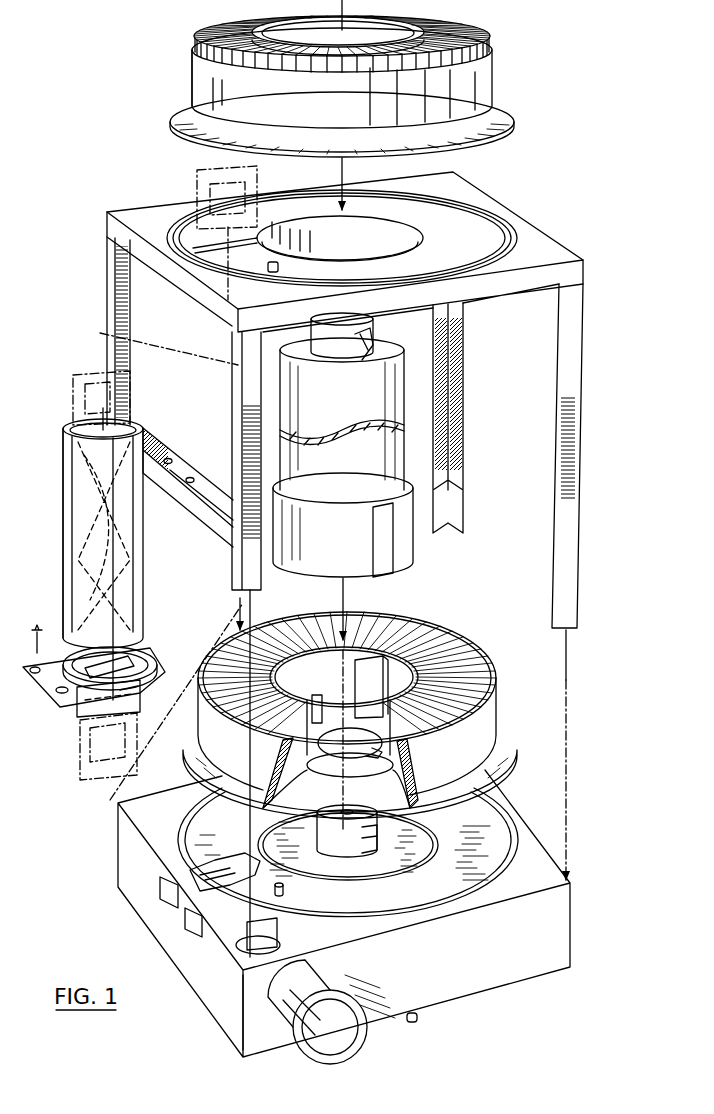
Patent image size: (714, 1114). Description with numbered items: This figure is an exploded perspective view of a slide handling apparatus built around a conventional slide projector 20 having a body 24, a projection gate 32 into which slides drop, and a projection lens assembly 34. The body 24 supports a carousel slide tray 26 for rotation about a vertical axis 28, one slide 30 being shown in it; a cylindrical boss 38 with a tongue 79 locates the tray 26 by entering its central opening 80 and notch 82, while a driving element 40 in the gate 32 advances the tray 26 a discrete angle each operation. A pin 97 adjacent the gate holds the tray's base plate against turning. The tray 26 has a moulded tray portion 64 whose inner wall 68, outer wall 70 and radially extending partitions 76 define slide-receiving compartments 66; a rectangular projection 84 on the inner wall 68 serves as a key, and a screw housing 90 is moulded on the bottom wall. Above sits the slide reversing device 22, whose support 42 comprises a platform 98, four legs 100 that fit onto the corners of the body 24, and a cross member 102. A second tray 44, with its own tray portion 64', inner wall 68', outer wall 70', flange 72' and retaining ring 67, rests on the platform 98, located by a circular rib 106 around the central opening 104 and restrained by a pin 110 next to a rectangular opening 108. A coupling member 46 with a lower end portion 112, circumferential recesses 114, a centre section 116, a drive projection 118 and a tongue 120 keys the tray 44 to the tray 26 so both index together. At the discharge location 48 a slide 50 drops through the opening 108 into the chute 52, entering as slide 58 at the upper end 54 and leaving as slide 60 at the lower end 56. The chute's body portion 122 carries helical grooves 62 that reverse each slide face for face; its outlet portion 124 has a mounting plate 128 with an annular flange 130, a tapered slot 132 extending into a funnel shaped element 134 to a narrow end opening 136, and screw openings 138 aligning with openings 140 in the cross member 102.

The slide projector 20 is at (576, 917).
The slide reversing device 22 is at (581, 60).
The projector body 24 is at (560, 945).
The slide tray 26 is at (447, 623).
The vertical axis 28 is at (344, 50).
The slide 30 is at (261, 773).
The projection gate 32 is at (186, 875).
The projection lens assembly 34 is at (364, 993).
The cylindrical boss 38 is at (345, 809).
The driving element 40 is at (236, 892).
The support 42 is at (574, 247).
The second slide tray 44 is at (499, 49).
The coupling member 46 is at (415, 394).
The discharge location 48 is at (192, 257).
The slide leaving the tray 50 is at (197, 177).
The chute 52 is at (152, 420).
The upper end of chute 54 is at (62, 424).
The lower end of chute 56 is at (52, 707).
The slide entering chute 58 is at (86, 369).
The slide leaving chute 60 is at (102, 789).
The grooves 62 is at (144, 545).
The tray portion 64 is at (358, 744).
The tray portion of second tray 64' is at (163, 78).
The slide-receiving compartments 66 is at (475, 657).
The slide retaining ring 67 is at (222, 34).
The inner wall 68 is at (344, 677).
The inner wall of second tray 68' is at (338, 60).
The outer wall 70 is at (347, 662).
The outer wall of second tray 70' is at (362, 89).
The flange of second tray 72' is at (365, 124).
The radially extending partitions 76 is at (290, 729).
The tongue 79 is at (380, 842).
The central opening 80 is at (348, 739).
The notch 82 is at (394, 747).
The rectangular projection 84 is at (377, 685).
The screw housing 90 is at (314, 699).
The pin 97 is at (285, 893).
The platform 98 is at (460, 187).
The legs 100 is at (107, 249).
The cross member 102 is at (217, 480).
The central opening of platform 104 is at (414, 237).
The circular rib 106 is at (513, 247).
The rectangular opening 108 is at (290, 244).
The pin 110 is at (280, 266).
The lower end portion 112 is at (415, 544).
The circumferential recesses 114 is at (283, 538).
The centre section 116 is at (326, 463).
The drive projection 118 is at (375, 327).
The tongue 120 is at (371, 357).
The body portion 122 is at (58, 522).
The outlet portion 124 is at (163, 659).
The mounting plate 128 is at (80, 716).
The annular flange 130 is at (150, 679).
The slot 132 is at (84, 657).
The funnel shaped element 134 is at (136, 699).
The end opening 136 is at (82, 751).
The screw openings 138 is at (36, 675).
The openings in cross member 140 is at (190, 483).